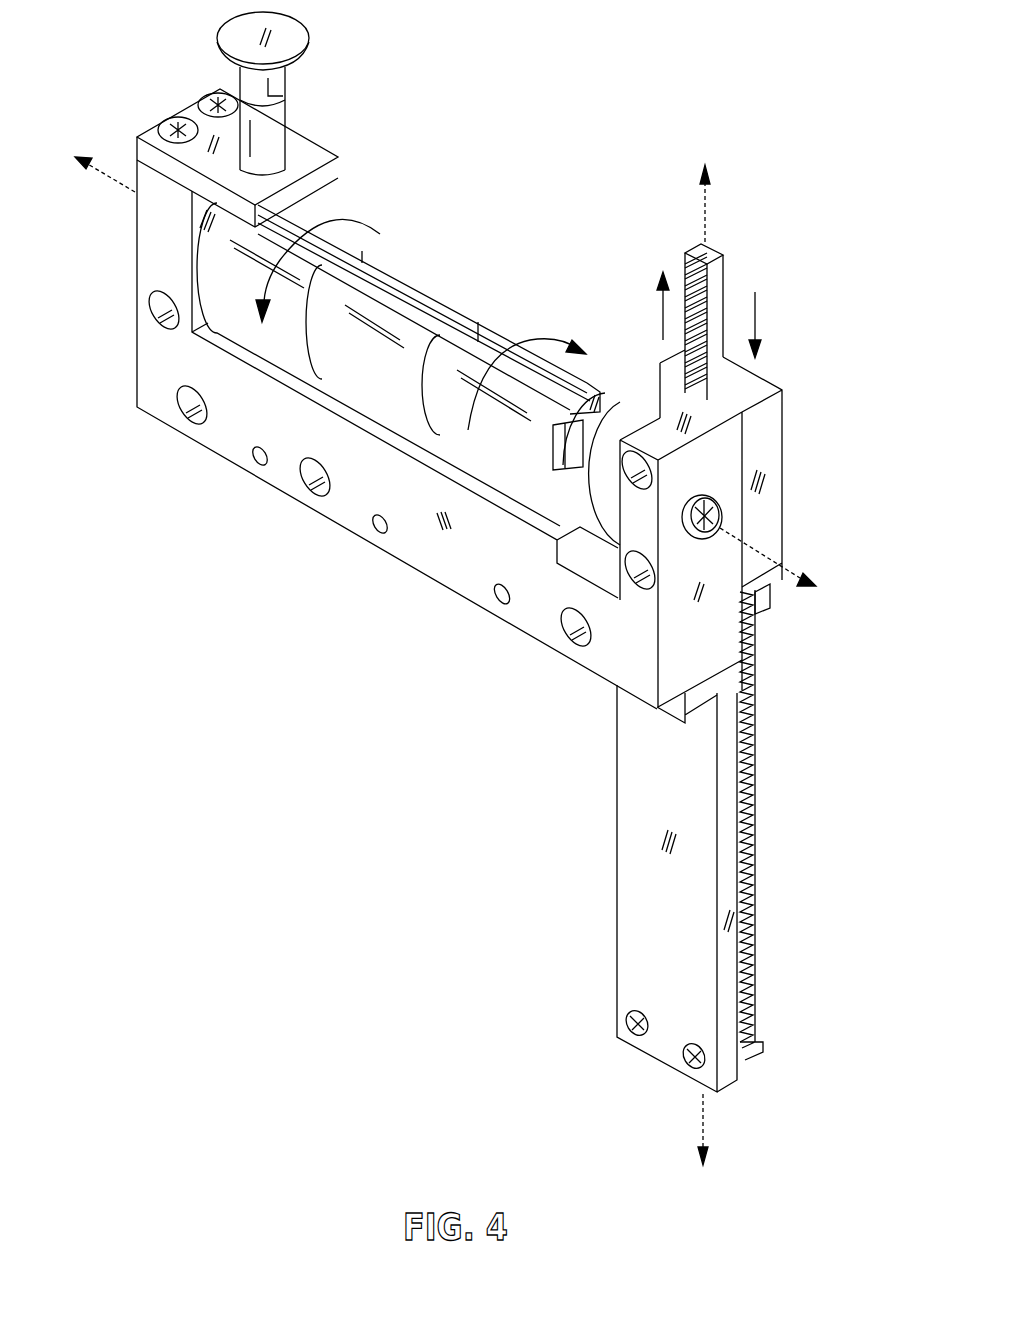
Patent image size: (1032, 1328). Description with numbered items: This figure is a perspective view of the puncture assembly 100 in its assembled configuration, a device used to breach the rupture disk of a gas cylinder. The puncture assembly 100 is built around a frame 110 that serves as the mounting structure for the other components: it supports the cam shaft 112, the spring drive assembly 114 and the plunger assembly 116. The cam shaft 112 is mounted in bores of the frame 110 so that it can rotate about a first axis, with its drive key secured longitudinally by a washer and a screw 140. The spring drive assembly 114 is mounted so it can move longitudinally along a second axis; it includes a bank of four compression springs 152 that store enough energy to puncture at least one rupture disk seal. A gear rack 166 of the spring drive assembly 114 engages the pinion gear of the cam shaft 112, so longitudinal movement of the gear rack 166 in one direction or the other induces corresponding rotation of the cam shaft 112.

The puncture assembly 100 is at (648, 72).
The frame 110 is at (150, 368).
The cam shaft 112 is at (468, 277).
The spring drive assembly 114 is at (758, 886).
The plunger assembly 116 is at (308, 110).
The screw 140 is at (718, 498).
The compression springs 152 is at (757, 725).
The gear rack 166 is at (716, 290).